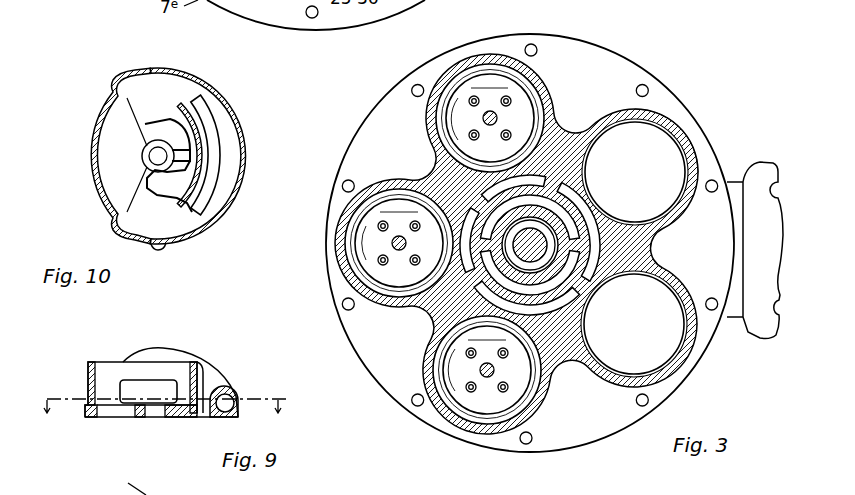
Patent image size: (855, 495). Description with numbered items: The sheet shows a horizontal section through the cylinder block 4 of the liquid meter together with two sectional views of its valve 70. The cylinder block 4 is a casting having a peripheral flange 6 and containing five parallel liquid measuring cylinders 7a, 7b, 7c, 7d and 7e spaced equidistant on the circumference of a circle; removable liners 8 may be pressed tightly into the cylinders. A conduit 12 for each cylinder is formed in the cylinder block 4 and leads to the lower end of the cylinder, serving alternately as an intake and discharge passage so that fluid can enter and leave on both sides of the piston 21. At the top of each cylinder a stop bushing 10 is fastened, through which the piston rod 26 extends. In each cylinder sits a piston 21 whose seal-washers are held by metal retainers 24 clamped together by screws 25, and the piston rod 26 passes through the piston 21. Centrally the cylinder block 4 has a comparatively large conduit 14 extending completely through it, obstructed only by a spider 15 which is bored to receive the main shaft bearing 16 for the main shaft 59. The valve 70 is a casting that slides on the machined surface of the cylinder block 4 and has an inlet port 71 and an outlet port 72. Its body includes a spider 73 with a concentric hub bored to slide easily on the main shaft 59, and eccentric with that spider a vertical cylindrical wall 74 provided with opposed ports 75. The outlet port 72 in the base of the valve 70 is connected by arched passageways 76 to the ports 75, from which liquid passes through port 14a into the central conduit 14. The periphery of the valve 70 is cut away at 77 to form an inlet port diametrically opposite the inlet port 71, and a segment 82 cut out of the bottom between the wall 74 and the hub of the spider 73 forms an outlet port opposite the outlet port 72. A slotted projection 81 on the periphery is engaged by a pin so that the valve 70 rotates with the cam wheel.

In FIG. 3, the cylinder block 4 is at (660, 110).
In FIG. 3, the peripheral flange 6 is at (622, 68).
In FIG. 3, the liquid measuring cylinder 7a is at (363, 243).
In FIG. 3, the liquid measuring cylinder 7b is at (478, 60).
In FIG. 3, the liquid measuring cylinder 7c is at (658, 142).
In FIG. 3, the liquid measuring cylinder 7d is at (663, 338).
In FIG. 3, the liquid measuring cylinder 7e is at (442, 392).
In FIG. 3, the removable liner 8 is at (693, 155).
In FIG. 3, the conduit 12 is at (467, 265).
In FIG. 3, the central conduit 14 is at (515, 282).
In FIG. 10, the port 14a is at (190, 193).
In FIG. 3, the spider 15 is at (557, 290).
In FIG. 3, the main shaft bearing 16 is at (553, 227).
In FIG. 3, the piston 21 is at (512, 113).
In FIG. 3, the metal retainer 24 is at (517, 88).
In FIG. 3, the screw 25 is at (480, 90).
In FIG. 3, the piston rod 26 is at (486, 116).
In FIG. 3, the main shaft 59 is at (530, 232).
In FIG. 10, the valve 70 is at (217, 93).
In FIG. 9, the valve 70 is at (102, 418).
In FIG. 10, the inlet port 71 is at (210, 148).
In FIG. 9, the inlet port 71 is at (210, 417).
In FIG. 10, the outlet port 72 is at (222, 117).
In FIG. 9, the outlet port 72 is at (230, 417).
In FIG. 10, the spider 73 is at (143, 158).
In FIG. 10, the cylindrical wall 74 is at (112, 108).
In FIG. 9, the cylindrical wall 74 is at (90, 365).
In FIG. 10, the port 75 is at (162, 95).
In FIG. 9, the port 75 is at (148, 390).
In FIG. 10, the arched passageway 76 is at (167, 222).
In FIG. 9, the arched passageway 76 is at (220, 361).
In FIG. 10, the cut-away portion 77 is at (92, 132).
In FIG. 10, the slotted projection 81 is at (163, 247).
In FIG. 9, the slotted projection 81 is at (125, 484).
In FIG. 10, the cut-out segment 82 is at (129, 155).
In FIG. 9, the cut-out segment 82 is at (113, 410).
In FIG. 9, the stop bushing 10 is at (166, 397).